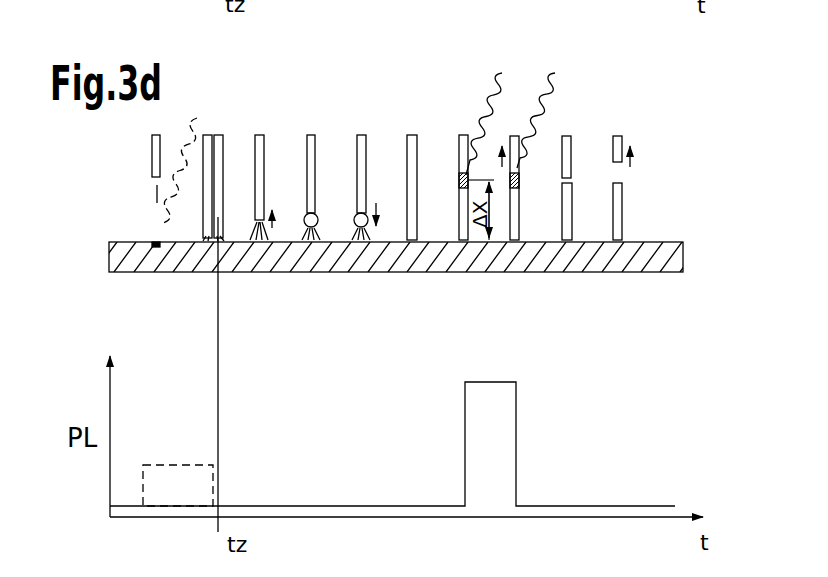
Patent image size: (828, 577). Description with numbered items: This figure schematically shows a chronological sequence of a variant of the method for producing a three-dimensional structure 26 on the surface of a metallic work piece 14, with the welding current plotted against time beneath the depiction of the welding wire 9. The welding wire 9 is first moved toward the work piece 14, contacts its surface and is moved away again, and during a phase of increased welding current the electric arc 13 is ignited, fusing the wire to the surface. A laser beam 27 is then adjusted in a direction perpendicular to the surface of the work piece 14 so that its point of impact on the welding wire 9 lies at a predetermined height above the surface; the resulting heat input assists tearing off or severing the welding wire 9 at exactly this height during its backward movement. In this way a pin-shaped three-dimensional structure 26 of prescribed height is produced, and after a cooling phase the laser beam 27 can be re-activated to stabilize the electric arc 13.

The welding wire 9 is at (147, 153).
The electric arc 13 is at (205, 247).
The work piece 14 is at (653, 282).
The three-dimensional structure 26 is at (630, 212).
The laser beam 27 is at (199, 114).